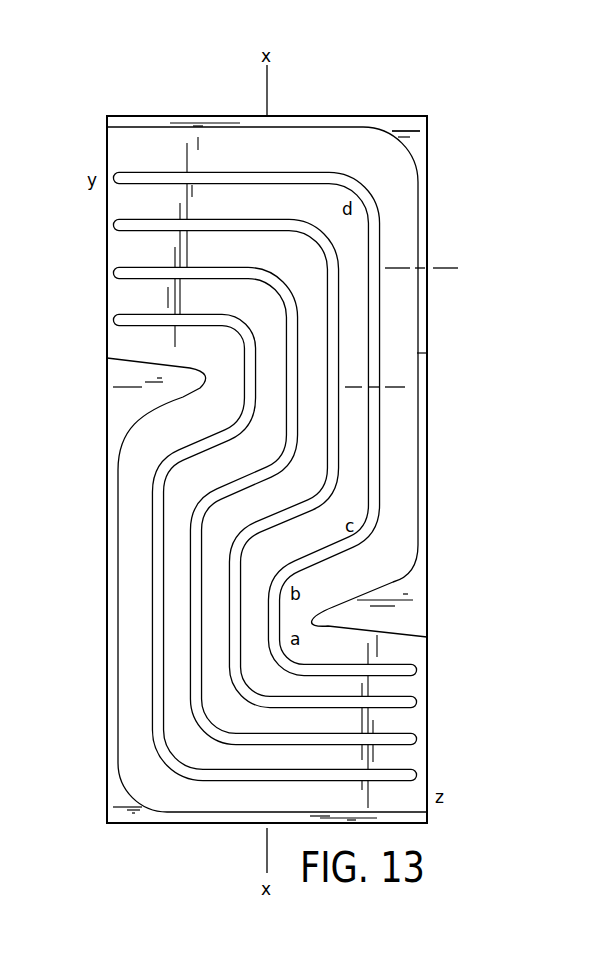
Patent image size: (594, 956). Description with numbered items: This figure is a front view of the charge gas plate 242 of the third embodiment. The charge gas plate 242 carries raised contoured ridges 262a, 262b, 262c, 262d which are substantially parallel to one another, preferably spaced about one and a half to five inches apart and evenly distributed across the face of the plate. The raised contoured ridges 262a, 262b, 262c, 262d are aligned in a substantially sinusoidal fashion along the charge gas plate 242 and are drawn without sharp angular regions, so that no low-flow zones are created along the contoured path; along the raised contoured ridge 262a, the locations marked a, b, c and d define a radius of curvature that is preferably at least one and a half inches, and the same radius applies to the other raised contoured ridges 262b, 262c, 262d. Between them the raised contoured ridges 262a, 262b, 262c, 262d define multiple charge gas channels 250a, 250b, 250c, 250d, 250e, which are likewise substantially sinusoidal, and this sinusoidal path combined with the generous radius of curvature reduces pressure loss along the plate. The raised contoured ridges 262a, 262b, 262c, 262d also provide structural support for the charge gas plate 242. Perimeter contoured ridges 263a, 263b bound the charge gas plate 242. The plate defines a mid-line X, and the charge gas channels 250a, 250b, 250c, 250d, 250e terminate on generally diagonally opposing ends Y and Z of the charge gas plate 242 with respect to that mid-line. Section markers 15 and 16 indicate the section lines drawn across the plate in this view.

The charge gas plate 242 is at (334, 104).
The perimeter contoured ridge 263a is at (407, 128).
The perimeter contoured ridge 263b is at (114, 795).
The charge gas channel 250a is at (300, 160).
The charge gas channel 250b is at (307, 424).
The charge gas channel 250c is at (323, 465).
The charge gas channel 250d is at (321, 507).
The charge gas channel 250e is at (320, 548).
The raised contoured ridge 262a is at (419, 671).
The raised contoured ridge 262b is at (419, 704).
The raised contoured ridge 262c is at (419, 740).
The raised contoured ridge 262d is at (419, 776).
The section line 15- 15 is at (392, 237).
The section line 16- 16 is at (353, 355).